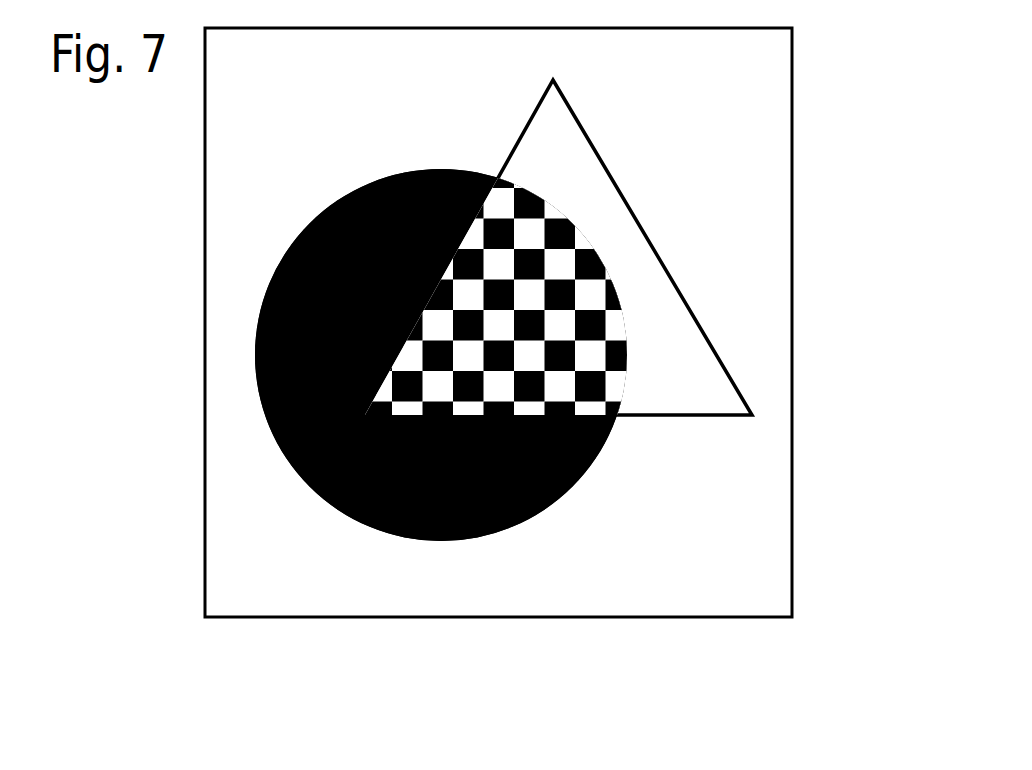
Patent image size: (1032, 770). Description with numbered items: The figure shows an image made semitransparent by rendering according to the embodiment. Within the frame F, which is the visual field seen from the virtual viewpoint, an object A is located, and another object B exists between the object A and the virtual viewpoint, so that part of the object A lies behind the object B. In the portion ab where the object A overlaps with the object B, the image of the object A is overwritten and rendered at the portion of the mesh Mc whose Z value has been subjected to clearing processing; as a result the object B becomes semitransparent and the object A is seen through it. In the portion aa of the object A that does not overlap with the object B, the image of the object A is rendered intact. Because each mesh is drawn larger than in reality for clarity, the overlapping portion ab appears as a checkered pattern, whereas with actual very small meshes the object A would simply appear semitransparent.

The frame F is at (793, 85).
The object A is at (460, 542).
The object B is at (688, 341).
The portion aa is at (573, 495).
The portion ab is at (593, 237).
The mesh Mc is at (600, 263).